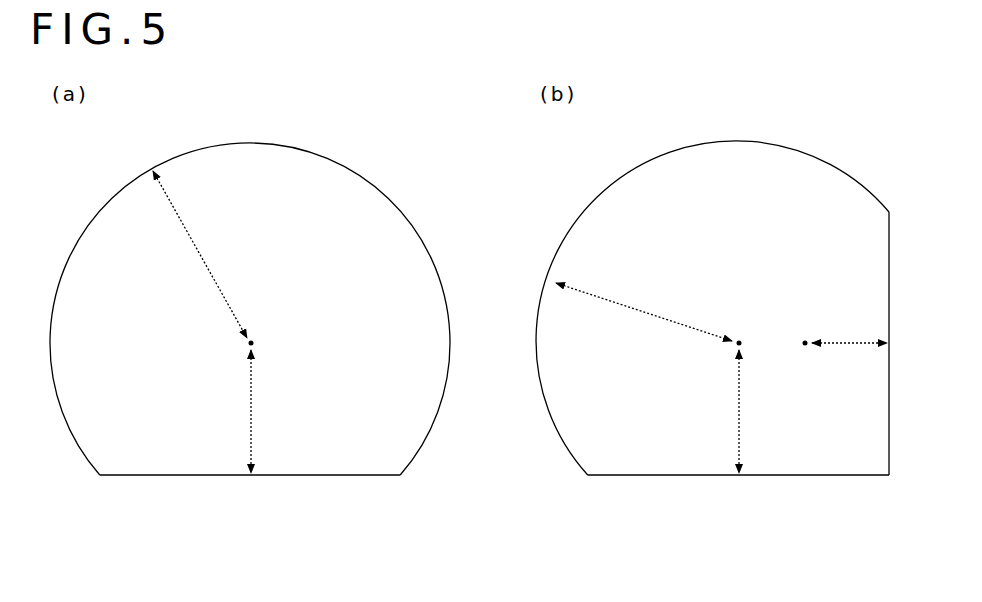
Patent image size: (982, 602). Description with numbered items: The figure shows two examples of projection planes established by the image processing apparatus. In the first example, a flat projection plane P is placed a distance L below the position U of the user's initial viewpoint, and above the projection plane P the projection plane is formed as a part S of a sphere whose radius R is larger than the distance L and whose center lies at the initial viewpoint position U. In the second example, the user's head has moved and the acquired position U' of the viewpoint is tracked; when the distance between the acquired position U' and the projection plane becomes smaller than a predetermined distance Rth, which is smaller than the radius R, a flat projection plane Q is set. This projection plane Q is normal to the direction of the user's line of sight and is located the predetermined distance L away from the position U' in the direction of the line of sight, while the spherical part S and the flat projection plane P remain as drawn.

The part of a sphere S is at (369, 176).
The flat projection plane P is at (158, 483).
The flat projection plane Q is at (898, 400).
The position of the user's initial viewpoint U is at (498, 327).
The acquired position of the user's viewpoint U' is at (807, 327).
The radius R is at (442, 259).
The distance L is at (505, 411).
The predetermined distance Rth is at (849, 360).